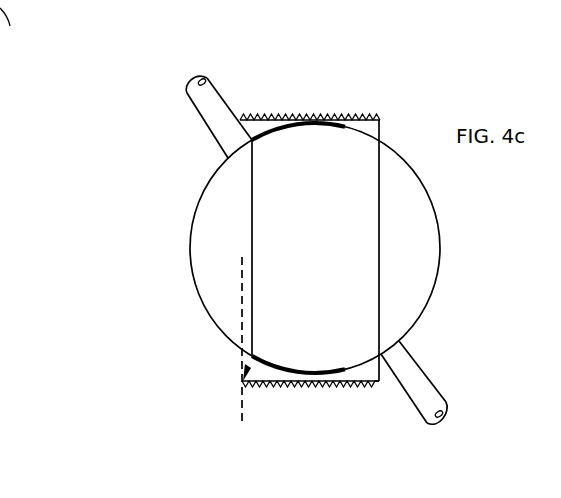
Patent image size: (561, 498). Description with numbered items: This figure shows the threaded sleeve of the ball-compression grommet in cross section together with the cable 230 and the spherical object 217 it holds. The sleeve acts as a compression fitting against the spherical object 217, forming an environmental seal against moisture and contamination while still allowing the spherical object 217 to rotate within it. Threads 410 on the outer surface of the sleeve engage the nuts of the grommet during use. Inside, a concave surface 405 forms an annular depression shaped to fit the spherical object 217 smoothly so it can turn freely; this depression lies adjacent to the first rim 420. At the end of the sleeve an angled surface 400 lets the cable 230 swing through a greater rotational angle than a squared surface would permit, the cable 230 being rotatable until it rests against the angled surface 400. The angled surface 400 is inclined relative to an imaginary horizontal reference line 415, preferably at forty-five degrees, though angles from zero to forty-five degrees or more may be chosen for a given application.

The spherical object 217 is at (192, 211).
The cable 230 is at (215, 107).
The angled surface 400 is at (242, 369).
The concave surface 405 is at (289, 371).
The threads 410 is at (322, 113).
The imaginary horizontal reference line 415 is at (238, 307).
The first rim 420 is at (253, 230).